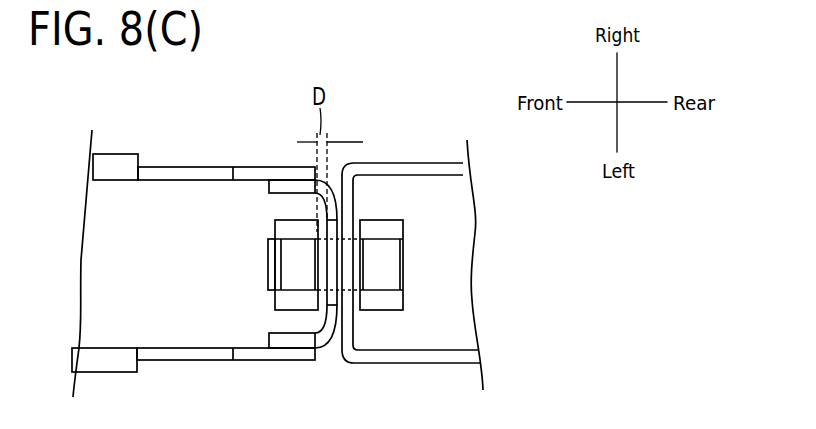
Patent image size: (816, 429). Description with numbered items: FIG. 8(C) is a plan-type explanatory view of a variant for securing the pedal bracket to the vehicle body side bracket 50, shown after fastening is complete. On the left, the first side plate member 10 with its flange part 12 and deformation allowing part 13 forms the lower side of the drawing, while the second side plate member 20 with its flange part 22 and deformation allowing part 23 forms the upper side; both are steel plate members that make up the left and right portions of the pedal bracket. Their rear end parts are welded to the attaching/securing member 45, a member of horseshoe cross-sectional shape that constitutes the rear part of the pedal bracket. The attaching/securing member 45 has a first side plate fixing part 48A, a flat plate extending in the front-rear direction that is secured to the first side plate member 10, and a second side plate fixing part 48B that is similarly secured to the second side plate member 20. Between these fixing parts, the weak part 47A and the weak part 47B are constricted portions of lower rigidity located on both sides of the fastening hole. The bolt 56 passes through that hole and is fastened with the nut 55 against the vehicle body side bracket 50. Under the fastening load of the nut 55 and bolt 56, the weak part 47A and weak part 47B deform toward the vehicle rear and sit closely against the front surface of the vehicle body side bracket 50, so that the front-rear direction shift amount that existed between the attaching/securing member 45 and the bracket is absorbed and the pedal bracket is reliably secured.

The first side plate member 10 is at (193, 387).
The flange part 12 is at (91, 367).
The deformation allowing part 13 is at (172, 352).
The second side plate member 20 is at (204, 126).
The flange part 22 is at (111, 164).
The deformation allowing part 23 is at (179, 175).
The attaching/securing member 45 is at (333, 264).
The weak part 47A is at (334, 330).
The weak part 47B is at (335, 207).
The first side plate fixing part 48A is at (293, 341).
The second side plate fixing part 48B is at (284, 186).
The vehicle body side bracket 50 is at (437, 170).
The nut 55 is at (296, 229).
The bolt 56 is at (386, 271).